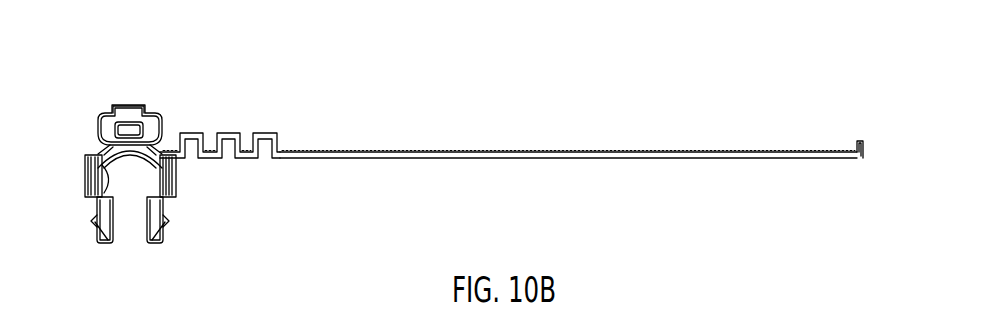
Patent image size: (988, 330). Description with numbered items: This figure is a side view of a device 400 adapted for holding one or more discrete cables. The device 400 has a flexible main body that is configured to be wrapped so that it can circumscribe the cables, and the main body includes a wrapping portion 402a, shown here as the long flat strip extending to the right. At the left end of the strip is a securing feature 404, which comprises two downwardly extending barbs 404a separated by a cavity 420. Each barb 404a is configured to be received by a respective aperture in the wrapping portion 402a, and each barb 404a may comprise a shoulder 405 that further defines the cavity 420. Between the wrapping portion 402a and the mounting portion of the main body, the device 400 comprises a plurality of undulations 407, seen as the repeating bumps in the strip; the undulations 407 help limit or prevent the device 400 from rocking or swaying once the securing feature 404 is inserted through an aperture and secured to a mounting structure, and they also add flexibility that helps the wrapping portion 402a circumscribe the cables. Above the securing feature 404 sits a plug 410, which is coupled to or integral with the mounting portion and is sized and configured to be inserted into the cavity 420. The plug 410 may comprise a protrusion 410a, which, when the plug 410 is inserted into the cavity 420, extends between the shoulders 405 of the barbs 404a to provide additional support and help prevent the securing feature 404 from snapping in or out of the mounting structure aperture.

The device 400 is at (173, 38).
The wrapping portion 402a is at (700, 152).
The securing feature 404 is at (82, 207).
The barb 404a is at (96, 237).
The shoulder 405 is at (100, 154).
The undulations 407 is at (269, 132).
The plug 410 is at (161, 116).
The protrusion 410a is at (127, 105).
The cavity 420 is at (126, 228).